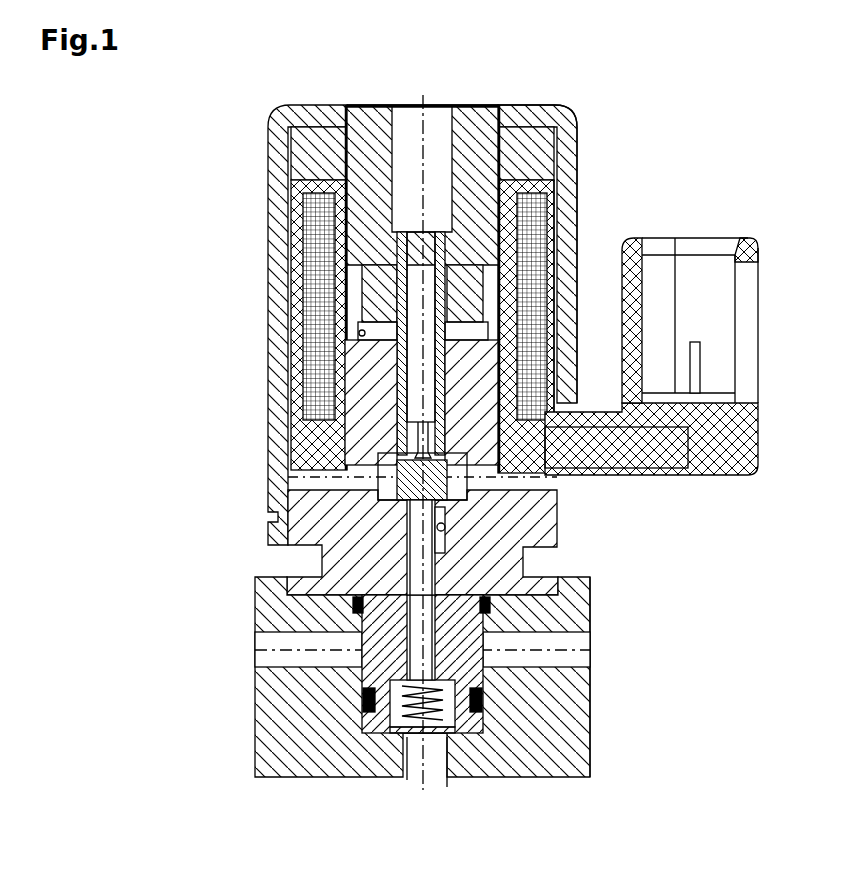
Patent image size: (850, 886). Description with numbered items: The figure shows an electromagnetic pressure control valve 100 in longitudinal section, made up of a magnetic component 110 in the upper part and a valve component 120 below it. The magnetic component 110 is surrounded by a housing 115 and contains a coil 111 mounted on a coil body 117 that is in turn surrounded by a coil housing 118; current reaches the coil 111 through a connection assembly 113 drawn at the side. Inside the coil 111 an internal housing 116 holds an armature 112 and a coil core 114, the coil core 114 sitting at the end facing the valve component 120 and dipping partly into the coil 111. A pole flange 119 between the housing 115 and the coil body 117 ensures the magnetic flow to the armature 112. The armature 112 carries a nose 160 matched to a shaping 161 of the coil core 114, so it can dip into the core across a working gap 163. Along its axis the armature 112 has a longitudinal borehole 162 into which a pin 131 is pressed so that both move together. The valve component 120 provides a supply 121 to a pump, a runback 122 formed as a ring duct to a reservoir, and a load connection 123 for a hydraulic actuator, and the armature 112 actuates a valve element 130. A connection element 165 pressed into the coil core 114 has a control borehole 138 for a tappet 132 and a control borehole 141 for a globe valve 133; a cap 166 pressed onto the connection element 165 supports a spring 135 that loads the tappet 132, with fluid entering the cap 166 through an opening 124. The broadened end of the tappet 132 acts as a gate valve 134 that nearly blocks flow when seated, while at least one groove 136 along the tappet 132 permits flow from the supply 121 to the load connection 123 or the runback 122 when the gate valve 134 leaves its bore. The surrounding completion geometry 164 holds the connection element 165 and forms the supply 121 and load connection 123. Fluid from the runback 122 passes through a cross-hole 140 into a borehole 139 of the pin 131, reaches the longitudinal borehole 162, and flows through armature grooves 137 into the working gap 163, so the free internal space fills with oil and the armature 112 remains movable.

The electromagnetic pressure control valve 100 is at (200, 172).
The magnetic component 110 is at (190, 318).
The valve component 120 is at (185, 546).
The coil 111 is at (487, 140).
The armature 112 is at (540, 122).
The connection assembly 113 is at (697, 367).
The coil core 114 is at (363, 407).
The housing 115 is at (525, 116).
The internal housing 116 is at (465, 104).
The coil body 117 is at (672, 453).
The coil housing 118 is at (740, 455).
The pole flange 119 is at (322, 150).
The supply 121 is at (447, 775).
The runback 122 is at (533, 480).
The load connection 123 is at (547, 662).
The opening 124 is at (447, 787).
The valve element 130 is at (385, 495).
The pin 131 is at (395, 265).
The tappet 132 is at (413, 615).
The globe valve 133 is at (452, 502).
The gate valve 134 is at (483, 690).
The spring 135 is at (407, 703).
The groove 136 is at (385, 630).
The armature groove 137 is at (537, 170).
The control borehole 138 is at (395, 608).
The borehole 139 is at (520, 268).
The cross-hole 140 is at (410, 455).
The control borehole 141 is at (447, 532).
The nose 160 is at (363, 291).
The shaping 161 is at (330, 386).
The longitudinal borehole 162 is at (383, 155).
The working gap 163 is at (549, 256).
The completion geometry 164 is at (533, 730).
The connection element 165 is at (487, 612).
The cap 166 is at (403, 727).